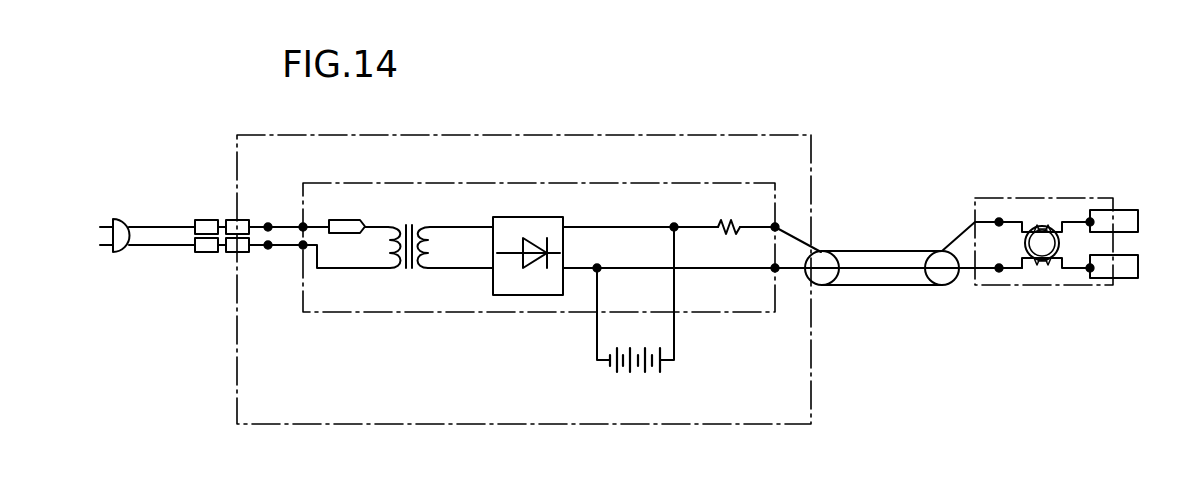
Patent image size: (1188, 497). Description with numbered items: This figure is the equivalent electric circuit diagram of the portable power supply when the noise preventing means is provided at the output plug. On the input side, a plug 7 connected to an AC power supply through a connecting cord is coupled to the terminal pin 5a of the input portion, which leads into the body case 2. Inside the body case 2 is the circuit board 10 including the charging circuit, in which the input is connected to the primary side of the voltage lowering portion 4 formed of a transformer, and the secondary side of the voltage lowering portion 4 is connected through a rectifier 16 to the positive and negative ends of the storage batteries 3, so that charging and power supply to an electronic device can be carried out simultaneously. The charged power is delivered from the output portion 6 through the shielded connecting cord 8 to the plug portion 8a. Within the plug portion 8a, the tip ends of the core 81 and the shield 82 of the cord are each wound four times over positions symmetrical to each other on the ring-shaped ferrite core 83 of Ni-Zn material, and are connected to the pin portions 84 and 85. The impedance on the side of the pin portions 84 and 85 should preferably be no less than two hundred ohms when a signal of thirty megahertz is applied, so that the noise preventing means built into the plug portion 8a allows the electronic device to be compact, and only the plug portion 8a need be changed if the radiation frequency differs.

The body case 2 is at (497, 425).
The storage batteries 3 is at (652, 372).
The voltage lowering portion 4 is at (412, 270).
The terminal pin 5a is at (233, 222).
The output portion 6 is at (822, 286).
The plug 7 is at (207, 253).
The connecting cord 8 is at (890, 260).
The plug portion 8a is at (1045, 286).
The circuit board 10 is at (428, 313).
The rectifier 16 is at (522, 217).
The core 81 is at (874, 267).
The shield 82 is at (845, 252).
The ferrite core 83 is at (1038, 228).
The pin portion 84 is at (1122, 218).
The pin portion 85 is at (1125, 272).